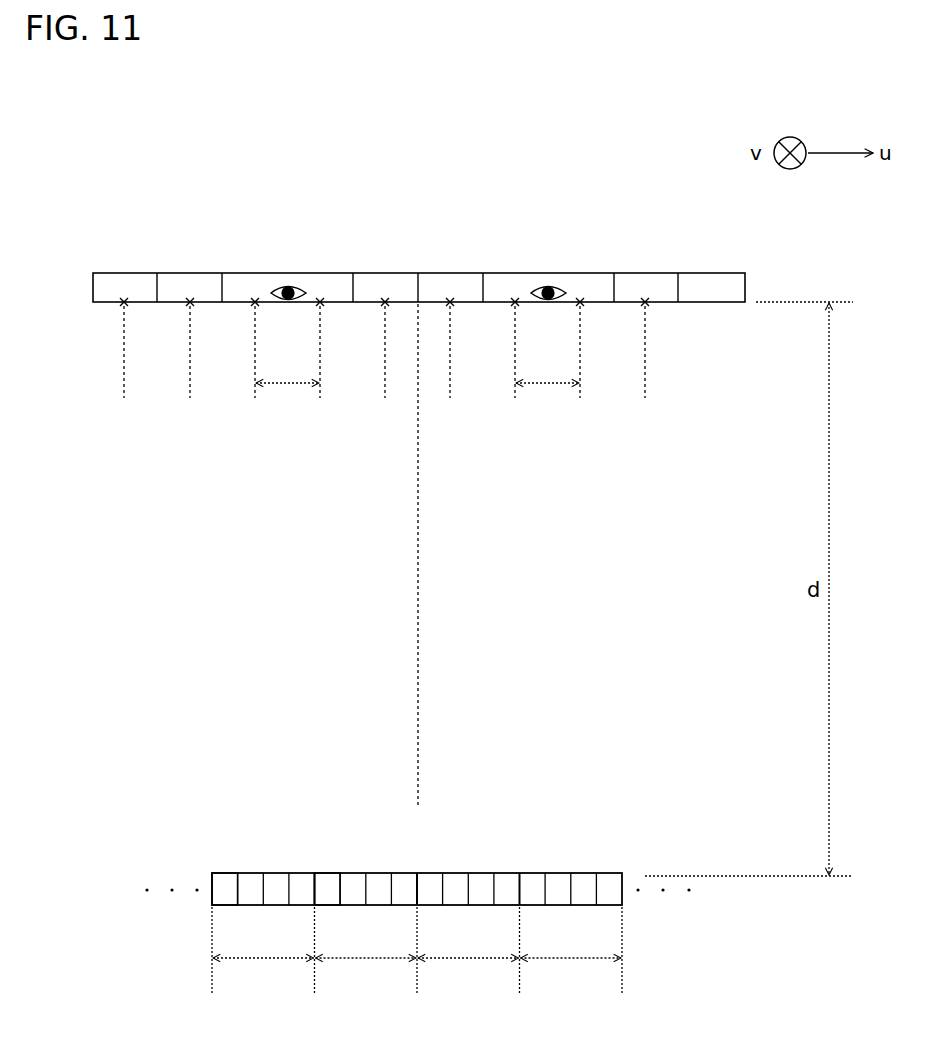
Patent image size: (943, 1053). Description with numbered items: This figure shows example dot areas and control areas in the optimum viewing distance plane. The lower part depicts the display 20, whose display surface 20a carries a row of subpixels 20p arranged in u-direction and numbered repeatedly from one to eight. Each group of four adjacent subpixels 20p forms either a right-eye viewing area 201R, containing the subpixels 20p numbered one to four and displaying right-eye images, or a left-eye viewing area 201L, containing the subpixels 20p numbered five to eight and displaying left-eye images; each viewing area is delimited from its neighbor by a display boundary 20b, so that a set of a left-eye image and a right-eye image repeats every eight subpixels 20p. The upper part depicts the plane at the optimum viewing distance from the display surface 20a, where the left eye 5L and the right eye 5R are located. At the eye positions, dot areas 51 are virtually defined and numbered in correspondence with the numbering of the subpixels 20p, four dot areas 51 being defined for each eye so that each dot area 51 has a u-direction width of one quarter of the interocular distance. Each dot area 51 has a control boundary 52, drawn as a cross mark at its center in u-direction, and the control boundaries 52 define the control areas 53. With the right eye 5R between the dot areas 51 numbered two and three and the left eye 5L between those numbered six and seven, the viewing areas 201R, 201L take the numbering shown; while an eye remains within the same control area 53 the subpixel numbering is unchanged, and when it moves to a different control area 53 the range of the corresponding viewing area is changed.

The right eye 5R is at (292, 285).
The left eye 5L is at (552, 285).
The dot area 51 is at (342, 290).
The control boundary 52 is at (189, 303).
The control area 53 is at (288, 381).
The display 20 is at (209, 870).
The display surface 20a is at (219, 872).
The subpixel 20p is at (318, 881).
The display boundary 20b is at (383, 950).
The right-eye viewing area 201R is at (366, 938).
The left-eye viewing area 201L is at (469, 938).